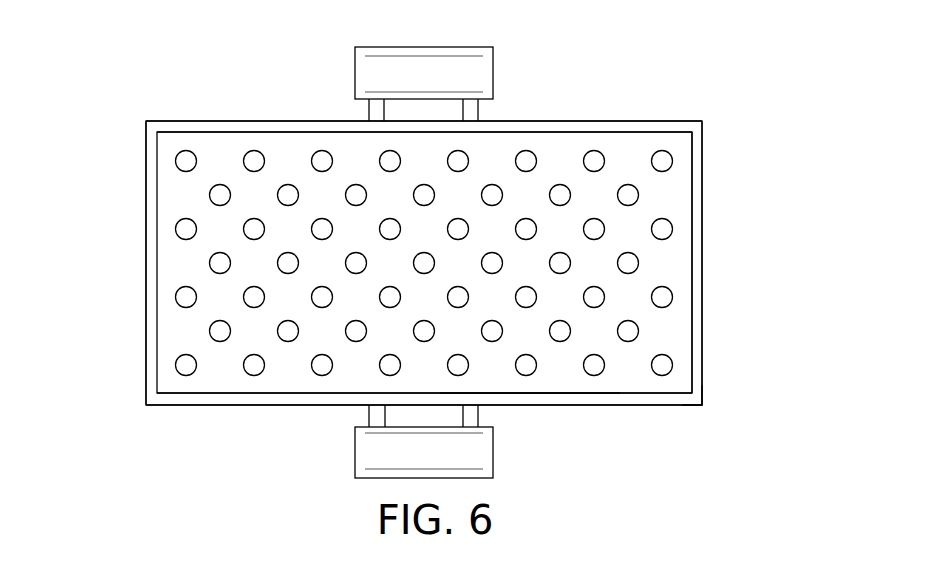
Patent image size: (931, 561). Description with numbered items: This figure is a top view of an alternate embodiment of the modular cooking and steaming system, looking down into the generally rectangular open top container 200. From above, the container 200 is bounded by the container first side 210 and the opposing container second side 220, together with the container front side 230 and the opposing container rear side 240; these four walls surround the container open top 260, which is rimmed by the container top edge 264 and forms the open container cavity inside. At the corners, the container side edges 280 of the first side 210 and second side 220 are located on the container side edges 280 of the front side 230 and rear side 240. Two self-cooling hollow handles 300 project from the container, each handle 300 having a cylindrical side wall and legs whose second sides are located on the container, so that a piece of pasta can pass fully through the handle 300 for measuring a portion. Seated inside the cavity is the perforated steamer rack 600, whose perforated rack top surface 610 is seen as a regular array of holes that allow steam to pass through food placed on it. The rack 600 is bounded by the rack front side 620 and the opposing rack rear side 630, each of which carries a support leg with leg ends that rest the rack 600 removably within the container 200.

The container 200 is at (134, 308).
The container first side 210 is at (702, 335).
The container second side 220 is at (146, 368).
The container front side 230 is at (632, 404).
The container rear side 240 is at (637, 121).
The container open top 260 is at (704, 258).
The container top edge 264 is at (507, 401).
The container side edge 280 is at (701, 405).
The handle 300 is at (430, 92).
The steamer rack 600 is at (687, 184).
The rack top surface 610 is at (187, 197).
The rack front side 620 is at (225, 393).
The rack rear side 630 is at (242, 132).